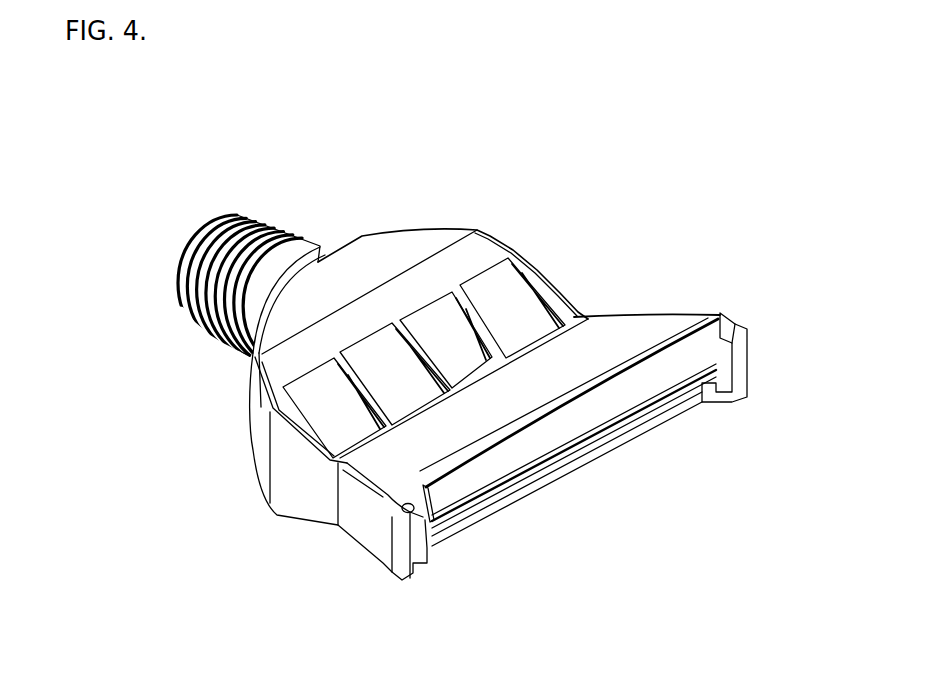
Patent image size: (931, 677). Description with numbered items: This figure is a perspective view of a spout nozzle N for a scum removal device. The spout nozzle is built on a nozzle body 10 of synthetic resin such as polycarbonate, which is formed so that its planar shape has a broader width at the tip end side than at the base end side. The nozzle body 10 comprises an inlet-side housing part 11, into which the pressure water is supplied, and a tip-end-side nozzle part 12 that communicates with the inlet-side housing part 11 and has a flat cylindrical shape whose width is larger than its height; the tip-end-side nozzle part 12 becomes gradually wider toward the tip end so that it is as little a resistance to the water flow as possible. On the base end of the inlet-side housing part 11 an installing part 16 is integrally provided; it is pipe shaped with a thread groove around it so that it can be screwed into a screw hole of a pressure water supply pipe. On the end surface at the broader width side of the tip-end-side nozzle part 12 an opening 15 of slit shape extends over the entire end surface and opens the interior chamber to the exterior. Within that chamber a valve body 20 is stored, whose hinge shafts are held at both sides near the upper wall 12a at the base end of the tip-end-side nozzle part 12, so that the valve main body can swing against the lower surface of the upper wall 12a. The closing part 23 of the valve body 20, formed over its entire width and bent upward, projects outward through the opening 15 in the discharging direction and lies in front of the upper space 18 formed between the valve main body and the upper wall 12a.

The spout nozzle N is at (523, 205).
The nozzle body 10 is at (278, 512).
The inlet-side housing part 11 is at (405, 228).
The tip-end-side nozzle part 12 is at (664, 313).
The upper wall 12a is at (596, 345).
The opening 15 is at (523, 483).
The installing part 16 is at (262, 215).
The upper space 18 is at (567, 474).
The valve body 20 is at (593, 443).
The closing part 23 is at (628, 387).